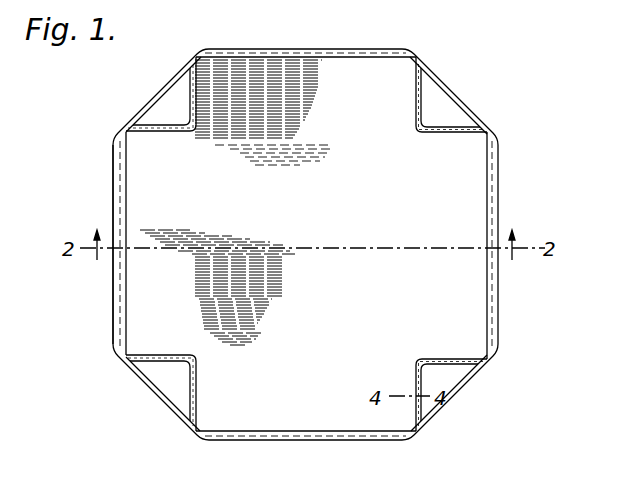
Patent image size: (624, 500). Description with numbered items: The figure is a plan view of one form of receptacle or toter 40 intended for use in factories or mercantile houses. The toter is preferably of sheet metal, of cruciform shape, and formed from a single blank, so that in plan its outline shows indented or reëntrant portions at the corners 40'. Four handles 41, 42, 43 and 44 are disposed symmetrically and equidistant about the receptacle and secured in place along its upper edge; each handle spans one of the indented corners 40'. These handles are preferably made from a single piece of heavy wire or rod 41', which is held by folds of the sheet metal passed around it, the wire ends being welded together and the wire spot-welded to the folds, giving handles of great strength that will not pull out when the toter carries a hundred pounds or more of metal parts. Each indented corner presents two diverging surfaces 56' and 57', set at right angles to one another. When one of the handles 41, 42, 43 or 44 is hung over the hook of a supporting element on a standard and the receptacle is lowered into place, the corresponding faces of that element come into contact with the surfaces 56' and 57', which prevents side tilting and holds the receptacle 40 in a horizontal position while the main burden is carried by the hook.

The receptacle 40 is at (330, 244).
The corners 40' is at (159, 415).
The handle 41 is at (456, 393).
The heavy wire or rod 41' is at (89, 247).
The handle 42 is at (480, 121).
The handle 43 is at (153, 96).
The handle 44 is at (142, 382).
The surface 56' is at (317, 252).
The surface 57' is at (306, 90).